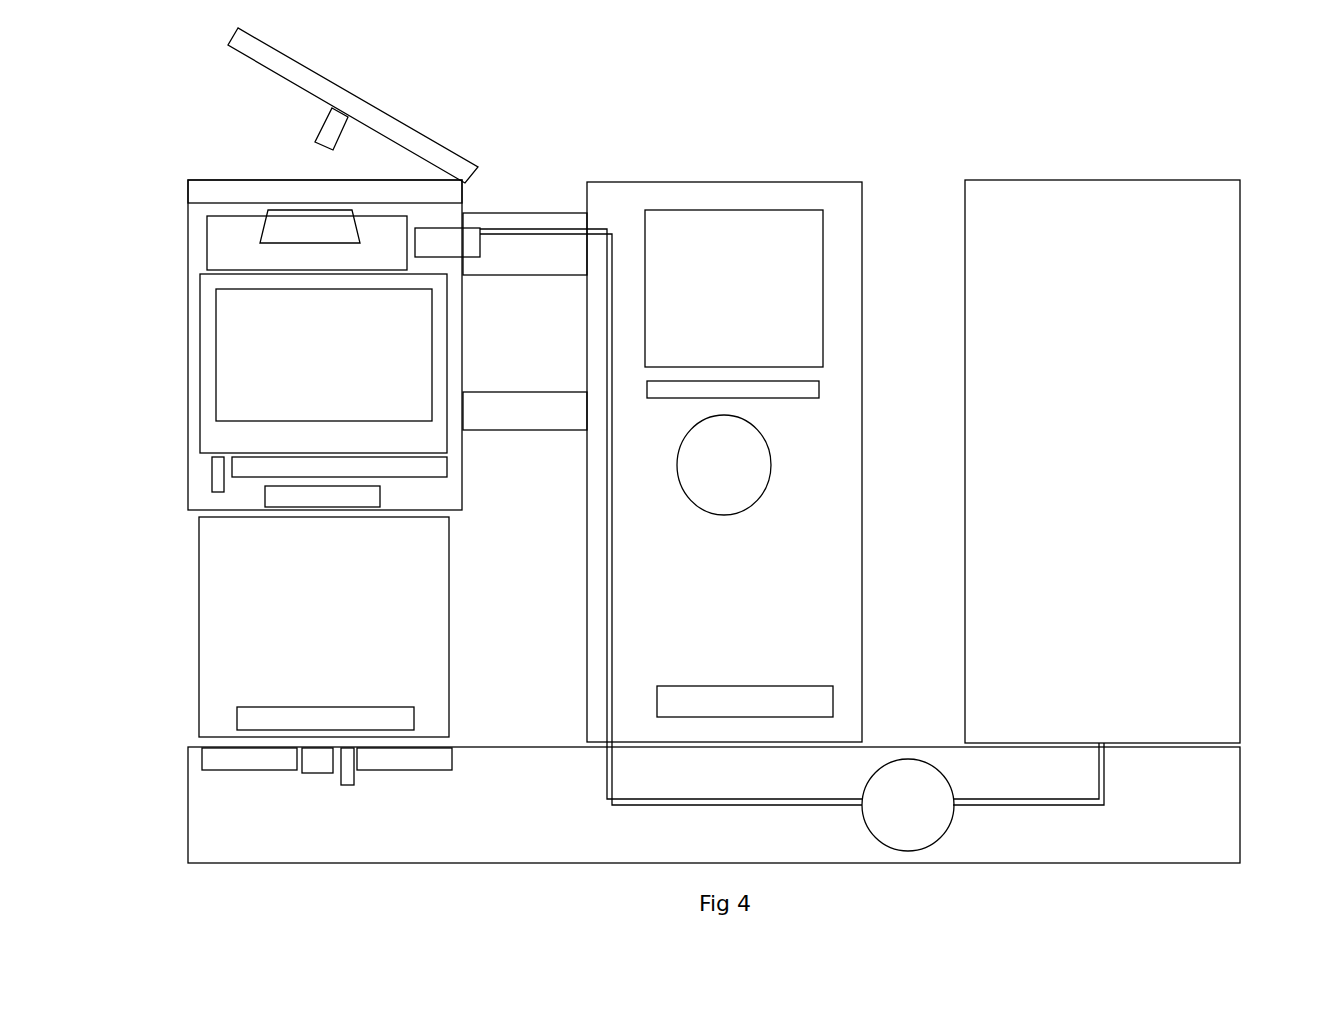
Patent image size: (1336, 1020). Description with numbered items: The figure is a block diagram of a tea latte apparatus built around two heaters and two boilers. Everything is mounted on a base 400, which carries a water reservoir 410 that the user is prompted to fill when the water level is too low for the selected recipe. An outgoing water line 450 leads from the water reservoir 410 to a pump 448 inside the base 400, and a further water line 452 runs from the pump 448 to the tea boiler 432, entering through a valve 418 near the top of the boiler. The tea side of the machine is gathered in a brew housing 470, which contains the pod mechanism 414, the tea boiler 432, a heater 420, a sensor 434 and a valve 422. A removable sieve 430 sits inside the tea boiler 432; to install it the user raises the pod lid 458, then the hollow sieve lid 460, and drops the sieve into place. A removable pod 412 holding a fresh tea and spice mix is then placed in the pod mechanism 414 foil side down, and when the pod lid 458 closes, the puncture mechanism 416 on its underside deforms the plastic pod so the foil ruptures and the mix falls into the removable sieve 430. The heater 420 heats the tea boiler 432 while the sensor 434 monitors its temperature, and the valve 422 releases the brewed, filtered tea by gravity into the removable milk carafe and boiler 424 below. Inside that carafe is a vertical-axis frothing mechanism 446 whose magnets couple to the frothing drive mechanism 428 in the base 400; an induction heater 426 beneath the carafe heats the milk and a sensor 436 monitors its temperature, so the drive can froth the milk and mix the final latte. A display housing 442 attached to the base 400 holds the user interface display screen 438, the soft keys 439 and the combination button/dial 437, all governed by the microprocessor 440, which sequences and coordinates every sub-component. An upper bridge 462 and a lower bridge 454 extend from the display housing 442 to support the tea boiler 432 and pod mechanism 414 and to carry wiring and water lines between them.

The base 400 is at (195, 840).
The water reservoir 410 is at (1220, 268).
The removable pod 412 is at (207, 225).
The pod mechanism 414 is at (208, 256).
The puncture mechanism 416 is at (322, 117).
The valve 418 is at (441, 257).
The heater 420 is at (430, 465).
The valve 422 is at (380, 495).
The removable milk carafe and boiler 424 is at (208, 600).
The induction heater 426 is at (205, 757).
The frothing drive mechanism 428 is at (311, 768).
The removable sieve 430 is at (225, 329).
The tea boiler 432 is at (215, 434).
The sensor 434 is at (215, 474).
The sensor 436 is at (347, 768).
The combination button/dial 437 is at (760, 465).
The user interface display screen 438 is at (813, 267).
The soft keys 439 is at (815, 382).
The microprocessor 440 is at (822, 703).
The display housing 442 is at (855, 589).
The frothing mechanism 446 is at (237, 716).
The pump 448 is at (910, 851).
The outgoing water line 450 is at (1030, 808).
The water line 452 is at (822, 808).
The lower bridge 454 is at (543, 392).
The pod lid 458 is at (260, 68).
The sieve lid 460 is at (200, 194).
The upper bridge 462 is at (543, 213).
The brew housing 470 is at (188, 370).